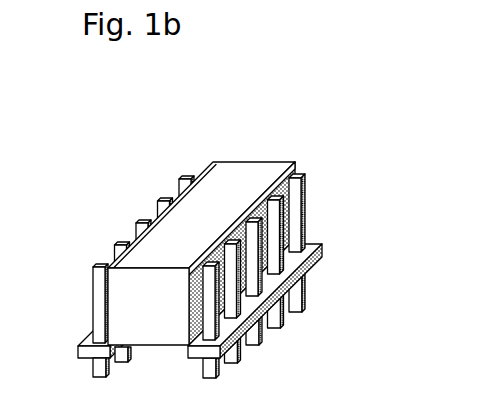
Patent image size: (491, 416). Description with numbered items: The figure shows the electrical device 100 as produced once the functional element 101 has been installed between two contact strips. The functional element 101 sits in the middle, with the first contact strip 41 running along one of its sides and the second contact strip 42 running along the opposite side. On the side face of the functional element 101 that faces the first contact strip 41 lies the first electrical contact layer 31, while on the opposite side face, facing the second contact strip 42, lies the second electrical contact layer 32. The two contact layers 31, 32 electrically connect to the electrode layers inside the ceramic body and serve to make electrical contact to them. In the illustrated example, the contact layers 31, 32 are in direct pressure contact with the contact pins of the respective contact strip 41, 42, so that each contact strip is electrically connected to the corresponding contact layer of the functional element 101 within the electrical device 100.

The electrical device 100 is at (116, 150).
The functional element 101 is at (240, 187).
The first electrical contact layer 31 is at (139, 211).
The second electrical contact layer 32 is at (282, 188).
The first contact strip 41 is at (78, 356).
The second contact strip 42 is at (262, 304).